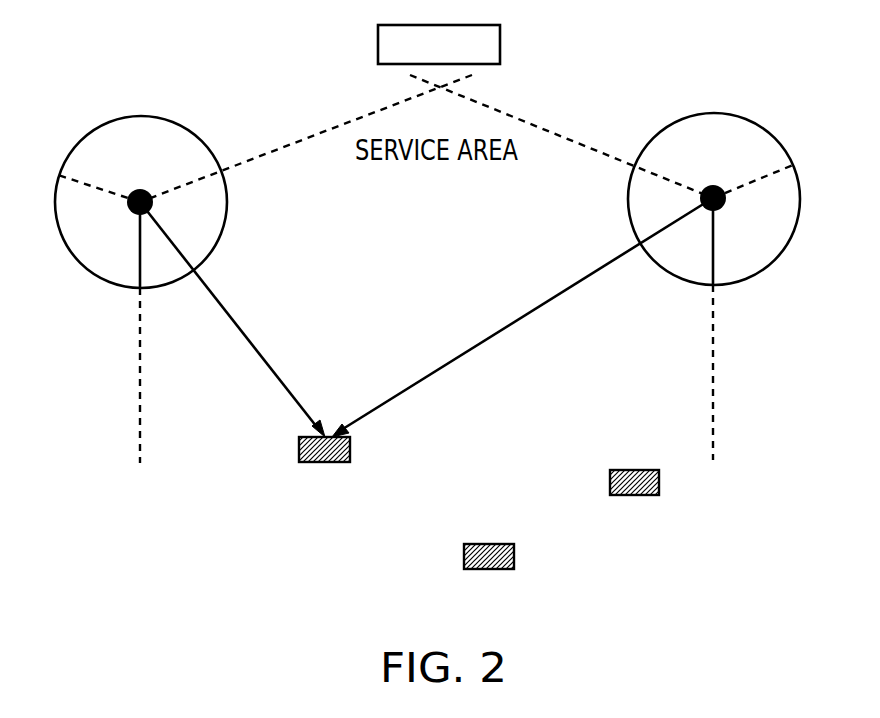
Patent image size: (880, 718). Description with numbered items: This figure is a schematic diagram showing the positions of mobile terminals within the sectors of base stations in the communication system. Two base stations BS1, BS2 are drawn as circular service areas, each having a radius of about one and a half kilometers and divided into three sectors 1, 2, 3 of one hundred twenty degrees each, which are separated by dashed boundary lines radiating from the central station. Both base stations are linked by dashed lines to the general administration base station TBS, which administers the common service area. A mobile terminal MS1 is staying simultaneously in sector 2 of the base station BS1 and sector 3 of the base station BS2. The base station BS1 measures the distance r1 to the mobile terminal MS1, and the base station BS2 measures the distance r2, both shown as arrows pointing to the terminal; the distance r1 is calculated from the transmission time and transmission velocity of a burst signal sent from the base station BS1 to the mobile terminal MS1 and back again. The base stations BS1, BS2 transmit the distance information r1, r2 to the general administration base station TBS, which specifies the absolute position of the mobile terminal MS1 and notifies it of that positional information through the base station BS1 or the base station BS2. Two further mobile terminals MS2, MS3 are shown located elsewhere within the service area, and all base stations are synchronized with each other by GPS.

The general administration base station TBS is at (426, 113).
The base station BS1 is at (140, 270).
The base station BS2 is at (714, 271).
The sector 1 is at (425, 173).
The sector 2 is at (474, 228).
The sector 3 is at (388, 239).
The distance r1 is at (232, 319).
The distance r2 is at (522, 317).
The mobile terminal MS1 is at (311, 462).
The mobile terminal MS2 is at (481, 569).
The mobile terminal MS3 is at (625, 495).